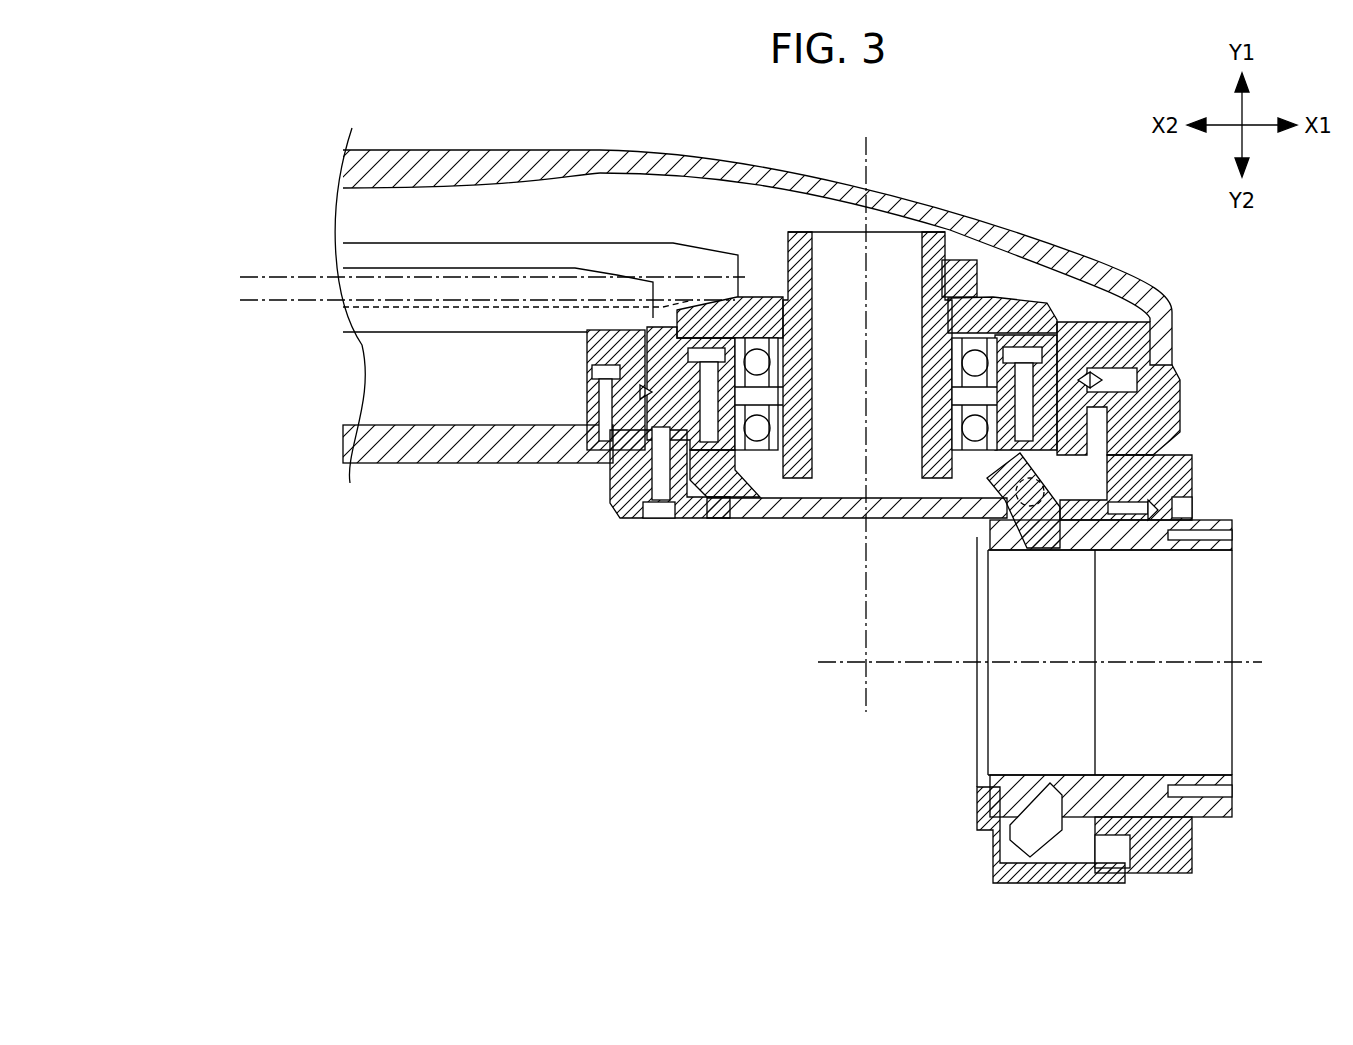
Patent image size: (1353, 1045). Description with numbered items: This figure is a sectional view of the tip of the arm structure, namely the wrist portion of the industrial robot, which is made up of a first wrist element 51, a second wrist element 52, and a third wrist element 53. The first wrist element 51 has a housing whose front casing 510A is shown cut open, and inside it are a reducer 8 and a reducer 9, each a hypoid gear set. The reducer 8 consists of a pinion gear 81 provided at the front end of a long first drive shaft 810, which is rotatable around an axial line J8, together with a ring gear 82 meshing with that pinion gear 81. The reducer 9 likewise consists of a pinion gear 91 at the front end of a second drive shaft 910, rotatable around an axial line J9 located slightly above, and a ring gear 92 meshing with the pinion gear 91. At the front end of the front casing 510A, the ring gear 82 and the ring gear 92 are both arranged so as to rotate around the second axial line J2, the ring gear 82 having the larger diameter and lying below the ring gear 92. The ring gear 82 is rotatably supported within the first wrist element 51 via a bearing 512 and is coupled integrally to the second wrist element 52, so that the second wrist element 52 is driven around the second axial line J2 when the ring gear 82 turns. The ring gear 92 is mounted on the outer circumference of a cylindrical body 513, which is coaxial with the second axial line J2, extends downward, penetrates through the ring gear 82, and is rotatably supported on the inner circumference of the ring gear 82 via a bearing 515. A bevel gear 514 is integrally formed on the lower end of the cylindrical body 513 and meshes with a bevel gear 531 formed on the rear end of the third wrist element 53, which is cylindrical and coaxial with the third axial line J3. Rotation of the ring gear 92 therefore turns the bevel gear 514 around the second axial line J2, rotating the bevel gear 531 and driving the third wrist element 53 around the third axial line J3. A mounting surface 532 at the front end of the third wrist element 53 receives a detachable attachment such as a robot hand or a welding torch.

The front casing 510A is at (390, 150).
The second drive shaft 910 is at (478, 258).
The first drive shaft 810 is at (447, 335).
The first wrist element 51 is at (1052, 234).
The cylindrical body 513 is at (934, 255).
The reducer 9 is at (745, 100).
The ring gear 92 is at (697, 317).
The pinion gear 91 is at (723, 260).
The bearing 515 is at (996, 418).
The bearing 512 is at (1096, 393).
The ring gear 82 is at (593, 347).
The pinion gear 81 is at (622, 318).
The reducer 8 is at (538, 586).
The bevel gear 514 is at (718, 490).
The second wrist element 52 is at (1196, 490).
The mounting surface 532 is at (1234, 548).
The third wrist element 53 is at (1222, 808).
The bevel gear 531 is at (1009, 838).
The second axial line J2 is at (865, 410).
The third axial line J3 is at (1054, 663).
The axial line J8 is at (470, 303).
The axial line J9 is at (475, 278).